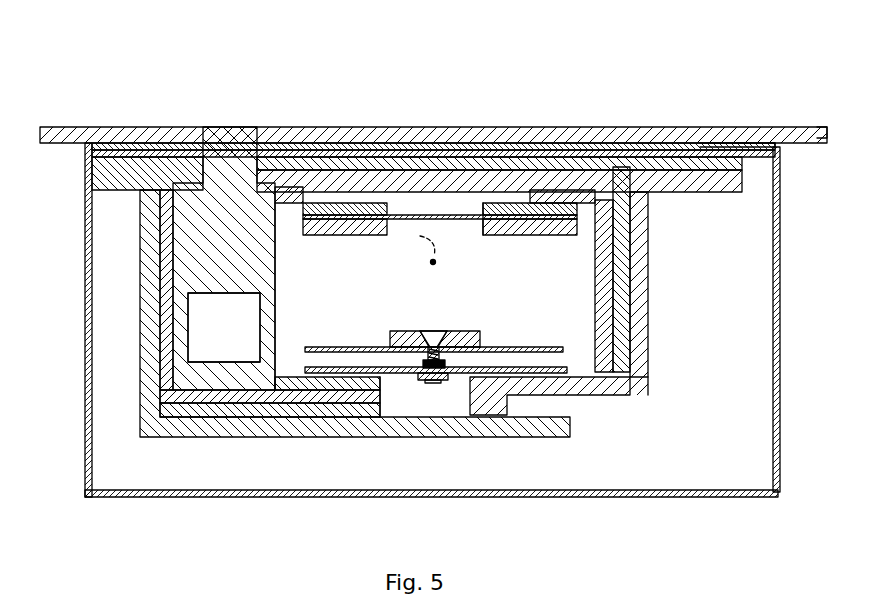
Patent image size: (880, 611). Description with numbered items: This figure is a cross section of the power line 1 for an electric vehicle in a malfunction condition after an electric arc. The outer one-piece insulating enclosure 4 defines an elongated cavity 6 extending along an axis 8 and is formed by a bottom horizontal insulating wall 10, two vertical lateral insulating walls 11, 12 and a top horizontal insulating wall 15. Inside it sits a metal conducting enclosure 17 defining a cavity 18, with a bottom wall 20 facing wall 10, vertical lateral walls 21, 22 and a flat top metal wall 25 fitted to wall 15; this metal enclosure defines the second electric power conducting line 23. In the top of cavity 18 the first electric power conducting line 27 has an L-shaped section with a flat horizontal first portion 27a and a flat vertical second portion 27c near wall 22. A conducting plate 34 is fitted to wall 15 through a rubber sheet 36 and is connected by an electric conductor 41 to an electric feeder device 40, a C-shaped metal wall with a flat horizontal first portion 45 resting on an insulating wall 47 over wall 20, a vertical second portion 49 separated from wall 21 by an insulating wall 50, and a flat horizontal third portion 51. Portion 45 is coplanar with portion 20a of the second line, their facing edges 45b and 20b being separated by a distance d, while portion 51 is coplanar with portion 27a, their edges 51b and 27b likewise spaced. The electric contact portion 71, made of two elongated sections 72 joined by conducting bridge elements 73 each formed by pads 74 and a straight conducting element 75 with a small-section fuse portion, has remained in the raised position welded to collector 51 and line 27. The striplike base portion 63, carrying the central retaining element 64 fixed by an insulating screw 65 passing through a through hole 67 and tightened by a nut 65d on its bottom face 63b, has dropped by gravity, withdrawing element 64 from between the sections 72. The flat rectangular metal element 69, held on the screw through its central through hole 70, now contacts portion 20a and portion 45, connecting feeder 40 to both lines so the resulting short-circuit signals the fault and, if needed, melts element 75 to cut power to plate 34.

The power line 1 is at (662, 105).
The elongated insulating enclosure 4 is at (515, 105).
The elongated parallelepiped cavity 6 is at (630, 482).
The axis 8 is at (421, 247).
The bottom horizontal insulating wall 10 is at (528, 497).
The vertical lateral insulating wall 11 is at (86, 274).
The vertical lateral insulating wall 12 is at (780, 300).
The top horizontal insulating wall 15 is at (722, 143).
The metal conducting enclosure 17 is at (668, 282).
The elongated parallelepiped cavity 18 is at (580, 352).
The bottom wall 20 is at (418, 437).
The portion of second electric power line 20a is at (620, 388).
The edge 20b is at (494, 420).
The vertical lateral wall 21 is at (150, 246).
The vertical lateral wall 22 is at (640, 240).
The second electric power conducting line 23 is at (390, 372).
The flat top metal wall 25 is at (604, 150).
The first electric power conducting line 27 is at (612, 272).
The flat horizontal first portion 27a is at (502, 232).
The edge 27b is at (483, 198).
The flat vertical second portion 27c is at (600, 312).
The plate 34 is at (800, 127).
The rubber sheet 36 is at (333, 127).
The electric feeder device 40 is at (290, 285).
The electric conductor 41 is at (228, 127).
The flat horizontal first portion 45 is at (283, 380).
The edge 45b is at (386, 388).
The insulating wall 47 is at (232, 398).
The vertical second portion 49 is at (272, 260).
The insulating wall 50 is at (188, 356).
The flat horizontal third portion 51 is at (383, 219).
The edge 51b is at (383, 195).
The striplike base portion 63 is at (514, 347).
The second elongated rectangular bottom face 63b is at (545, 362).
The central retaining element 64 is at (470, 340).
The insulating screw 65 is at (433, 335).
The nut 65d is at (424, 336).
The through hole 67 is at (440, 340).
The flat rectangular metal element 69 is at (484, 380).
The central through hole 70 is at (435, 383).
The electric contact portion 71 is at (466, 225).
The elongated section 72 is at (345, 235).
The conducting bridge element 73 is at (408, 195).
The rectangular metal pad 74 is at (335, 208).
The straight conducting element 75 is at (432, 200).